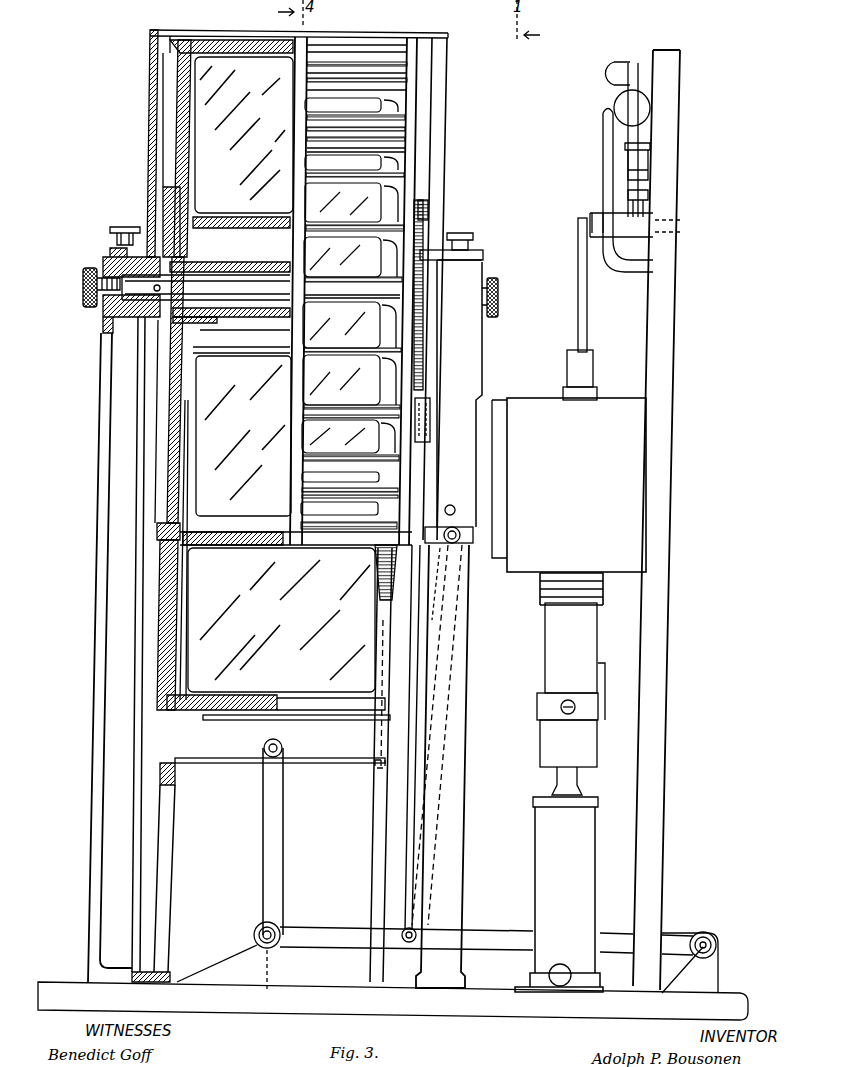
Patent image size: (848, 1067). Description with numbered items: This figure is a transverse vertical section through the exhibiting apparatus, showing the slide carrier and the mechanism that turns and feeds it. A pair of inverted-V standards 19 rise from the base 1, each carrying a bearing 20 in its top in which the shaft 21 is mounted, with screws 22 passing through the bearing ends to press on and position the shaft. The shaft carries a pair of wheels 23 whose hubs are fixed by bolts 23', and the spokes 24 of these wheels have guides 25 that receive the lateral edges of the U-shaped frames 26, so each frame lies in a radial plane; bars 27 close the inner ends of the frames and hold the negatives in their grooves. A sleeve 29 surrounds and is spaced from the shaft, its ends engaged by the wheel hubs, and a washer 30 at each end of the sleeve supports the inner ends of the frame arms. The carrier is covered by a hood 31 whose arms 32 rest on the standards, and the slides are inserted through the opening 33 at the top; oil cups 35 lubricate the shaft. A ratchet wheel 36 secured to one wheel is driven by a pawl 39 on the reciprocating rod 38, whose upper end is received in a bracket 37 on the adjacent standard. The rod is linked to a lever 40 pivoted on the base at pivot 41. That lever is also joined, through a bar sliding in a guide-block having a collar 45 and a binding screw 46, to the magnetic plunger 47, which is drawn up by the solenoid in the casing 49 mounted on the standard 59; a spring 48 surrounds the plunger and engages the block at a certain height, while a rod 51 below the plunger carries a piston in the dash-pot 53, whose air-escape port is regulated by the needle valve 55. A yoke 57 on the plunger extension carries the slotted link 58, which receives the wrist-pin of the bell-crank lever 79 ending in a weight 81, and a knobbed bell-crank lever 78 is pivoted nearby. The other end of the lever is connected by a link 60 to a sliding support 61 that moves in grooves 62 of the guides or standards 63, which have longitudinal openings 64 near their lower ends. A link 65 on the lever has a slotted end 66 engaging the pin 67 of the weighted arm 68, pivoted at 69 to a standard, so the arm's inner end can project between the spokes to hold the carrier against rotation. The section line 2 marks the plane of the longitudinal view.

The base 1 is at (478, 989).
The section line 2 is at (266, 978).
The standards 19 is at (478, 897).
The bearing 20 is at (103, 262).
The shaft 21 is at (252, 286).
The screws 22 is at (87, 308).
The wheels 23 is at (272, 374).
The bolts 23' is at (180, 291).
The spokes 24 is at (173, 127).
The guides 25 is at (400, 118).
The U-shaped frames 26 is at (197, 83).
The bars 27 is at (238, 229).
The sleeve 29 is at (258, 320).
The washer 30 is at (212, 324).
The hood 31 is at (150, 62).
The arms 32 is at (448, 192).
The opening 33 is at (442, 42).
The oil cups 35 is at (112, 230).
The ratchet wheel 36 is at (430, 215).
The bracket 37 is at (484, 256).
The reciprocating rod 38 is at (424, 373).
The pawl 39 is at (441, 404).
The lever 40 is at (492, 946).
The pivot 41 is at (690, 964).
The collar 45 is at (537, 707).
The binding screw 46 is at (578, 710).
The magnetic plunger 47 is at (575, 661).
The spring 48 is at (545, 602).
The casing 49 is at (569, 485).
The rod 51 is at (585, 786).
The dash-pot 53 is at (559, 899).
The needle valve 55 is at (563, 967).
The yoke 57 is at (595, 373).
The slotted link 58 is at (588, 323).
The standard 59 is at (671, 722).
The link 60 is at (285, 857).
The sliding support 61 is at (280, 750).
The grooves 62 is at (247, 722).
The guides or standards 63 is at (178, 779).
The longitudinal openings 64 is at (170, 870).
The link 65 is at (450, 779).
The slotted end 66 is at (436, 584).
The pin 67 is at (470, 525).
The weighted arm 68 is at (459, 545).
The pivot 69 is at (451, 504).
The bell-crank lever 78 is at (612, 70).
The bell-crank lever 79 is at (621, 200).
The weight 81 is at (620, 106).